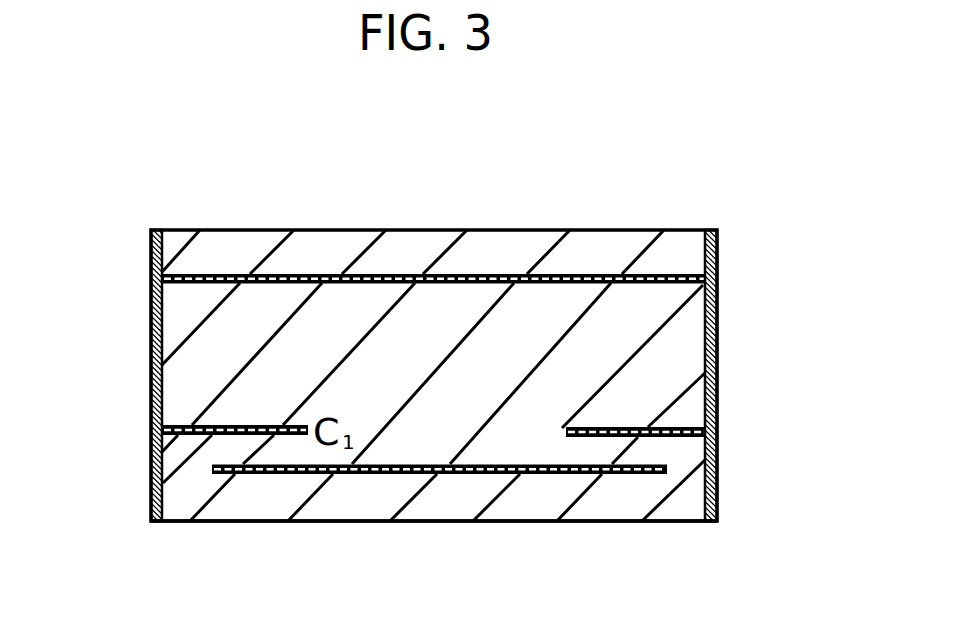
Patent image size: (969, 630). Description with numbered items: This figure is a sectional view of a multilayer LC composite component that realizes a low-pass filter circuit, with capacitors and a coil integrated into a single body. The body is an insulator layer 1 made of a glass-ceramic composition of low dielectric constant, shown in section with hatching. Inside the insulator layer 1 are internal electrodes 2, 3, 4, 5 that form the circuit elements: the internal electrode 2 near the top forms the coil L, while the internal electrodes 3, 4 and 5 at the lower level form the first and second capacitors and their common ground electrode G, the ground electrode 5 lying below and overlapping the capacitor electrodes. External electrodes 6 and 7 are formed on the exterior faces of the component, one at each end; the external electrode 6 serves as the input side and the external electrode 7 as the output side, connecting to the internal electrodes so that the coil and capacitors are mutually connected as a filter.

The insulator layer 1 is at (590, 313).
The internal electrode 2 is at (384, 278).
The internal electrode 3 is at (151, 493).
The internal electrode 4 is at (667, 437).
The internal electrode 5 is at (386, 464).
The external electrode 6 is at (148, 325).
The external electrode 7 is at (718, 327).